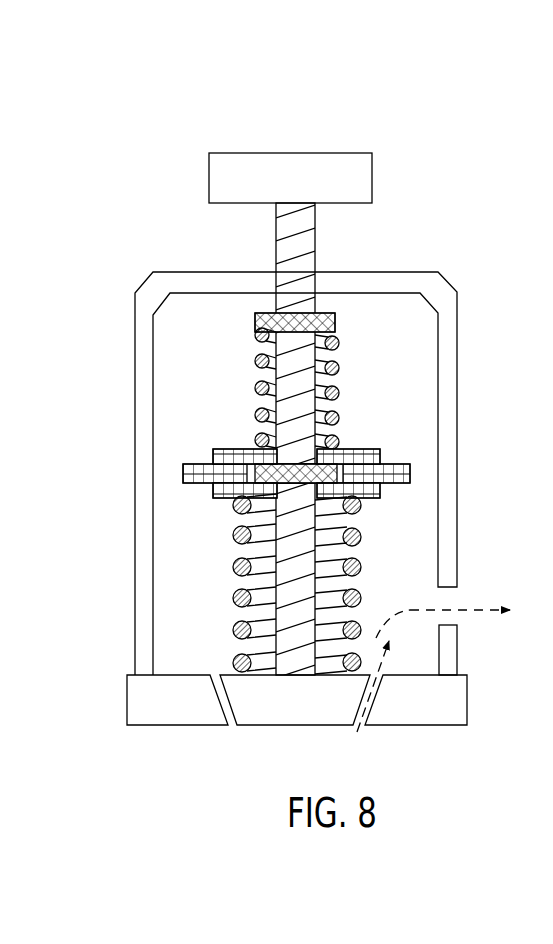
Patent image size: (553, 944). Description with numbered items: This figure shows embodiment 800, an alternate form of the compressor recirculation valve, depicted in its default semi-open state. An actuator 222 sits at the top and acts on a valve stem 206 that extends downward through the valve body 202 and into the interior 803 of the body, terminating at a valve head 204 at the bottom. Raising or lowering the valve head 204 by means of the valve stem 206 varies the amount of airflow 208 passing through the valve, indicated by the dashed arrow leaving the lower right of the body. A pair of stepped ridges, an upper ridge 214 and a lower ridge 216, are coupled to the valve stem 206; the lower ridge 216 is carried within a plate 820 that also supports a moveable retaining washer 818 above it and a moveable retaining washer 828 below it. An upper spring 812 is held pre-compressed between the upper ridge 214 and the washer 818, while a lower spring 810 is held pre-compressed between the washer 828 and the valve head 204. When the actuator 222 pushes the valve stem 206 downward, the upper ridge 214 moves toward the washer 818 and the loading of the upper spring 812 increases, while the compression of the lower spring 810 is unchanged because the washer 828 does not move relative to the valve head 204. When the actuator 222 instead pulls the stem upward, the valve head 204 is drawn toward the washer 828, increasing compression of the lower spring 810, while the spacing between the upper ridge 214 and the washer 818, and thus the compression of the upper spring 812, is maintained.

The embodiment 800 is at (336, 128).
The actuator 222 is at (304, 189).
The valve stem 206 is at (316, 242).
The upper ridge 214 is at (277, 313).
The valve body 202 is at (407, 271).
The housing interior chamber 803 is at (396, 352).
The lower ridge 216 is at (267, 476).
The moveable retaining washer 818 is at (227, 450).
The upper spring 812 is at (334, 393).
The plate 820 is at (397, 483).
The moveable retaining washer 828 is at (230, 498).
The lower spring 810 is at (359, 568).
The airflow 208 is at (465, 610).
The valve head 204 is at (267, 726).